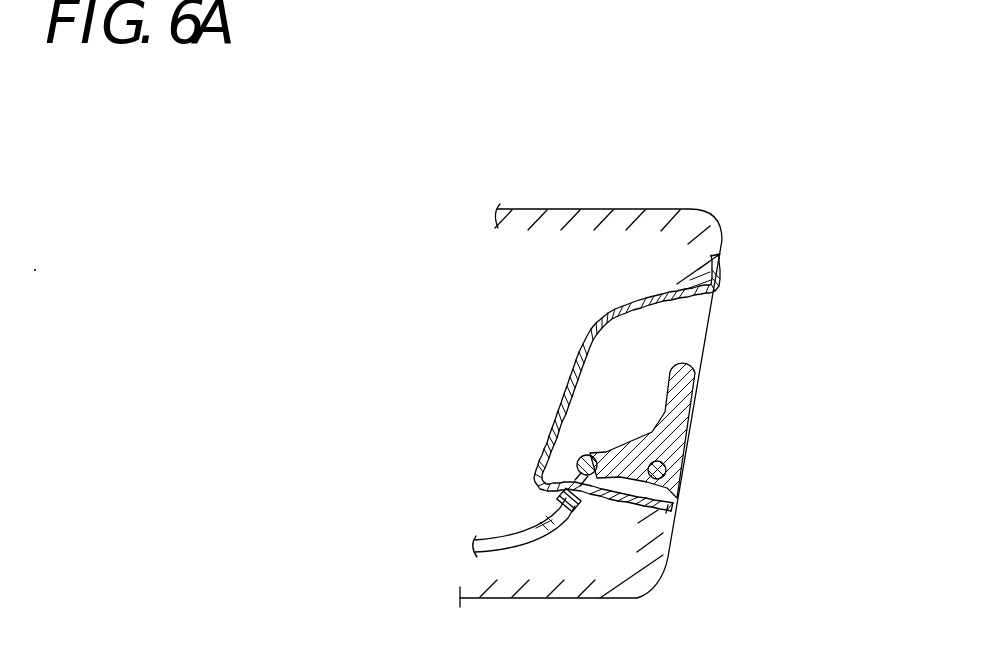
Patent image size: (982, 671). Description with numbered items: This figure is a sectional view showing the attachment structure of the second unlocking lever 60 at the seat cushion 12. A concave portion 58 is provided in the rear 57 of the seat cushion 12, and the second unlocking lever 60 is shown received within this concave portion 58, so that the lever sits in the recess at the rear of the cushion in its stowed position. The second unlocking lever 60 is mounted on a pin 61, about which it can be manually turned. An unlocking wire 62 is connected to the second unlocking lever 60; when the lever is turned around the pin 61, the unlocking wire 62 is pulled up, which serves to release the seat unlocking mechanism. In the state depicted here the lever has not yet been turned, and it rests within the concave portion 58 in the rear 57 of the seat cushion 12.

The seat cushion 12 is at (543, 208).
The rear of the seat cushion 57 is at (668, 557).
The concave portion 58 is at (628, 298).
The second unlocking lever 60 is at (697, 408).
The pin 61 is at (662, 469).
The unlocking wire 62 is at (558, 484).